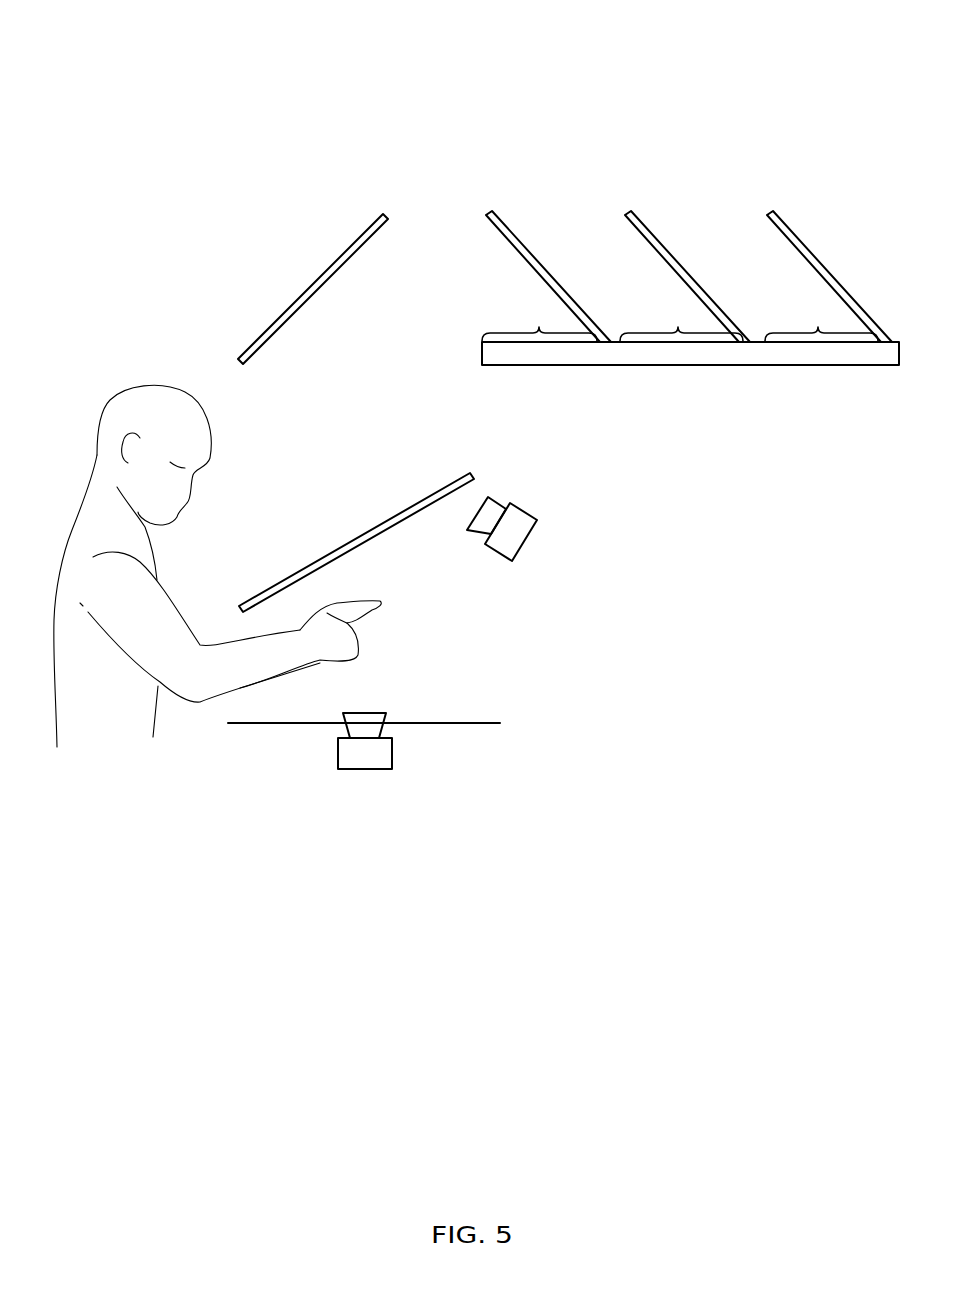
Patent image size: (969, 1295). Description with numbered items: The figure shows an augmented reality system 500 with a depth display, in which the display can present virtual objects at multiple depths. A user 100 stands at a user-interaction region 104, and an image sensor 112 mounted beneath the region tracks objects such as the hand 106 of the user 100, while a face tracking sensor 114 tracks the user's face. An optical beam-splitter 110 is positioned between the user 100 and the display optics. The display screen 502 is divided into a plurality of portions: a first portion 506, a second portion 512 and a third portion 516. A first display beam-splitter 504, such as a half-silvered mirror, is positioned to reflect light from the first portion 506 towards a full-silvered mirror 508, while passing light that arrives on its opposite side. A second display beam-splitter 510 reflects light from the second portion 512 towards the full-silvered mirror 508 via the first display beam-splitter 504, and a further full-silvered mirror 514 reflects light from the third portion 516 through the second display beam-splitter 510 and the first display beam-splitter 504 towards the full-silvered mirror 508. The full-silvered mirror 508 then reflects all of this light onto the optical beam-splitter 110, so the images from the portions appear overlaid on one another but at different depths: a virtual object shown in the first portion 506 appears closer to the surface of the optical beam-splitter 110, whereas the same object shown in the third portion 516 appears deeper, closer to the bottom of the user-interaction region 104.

The augmented reality system 500 is at (376, 90).
The user 100 is at (142, 385).
The hand 106 is at (362, 638).
The optical beam-splitter 110 is at (448, 483).
The face tracking sensor 114 is at (527, 535).
The user-interaction region 104 is at (521, 634).
The image sensor 112 is at (363, 769).
The display screen 502 is at (672, 366).
The first display beam-splitter 504 is at (512, 232).
The first portion 506 is at (539, 320).
The full-silvered mirror 508 is at (312, 285).
The second display beam-splitter 510 is at (653, 232).
The second portion 512 is at (681, 320).
The further full-silvered mirror 514 is at (792, 232).
The third portion 516 is at (821, 320).